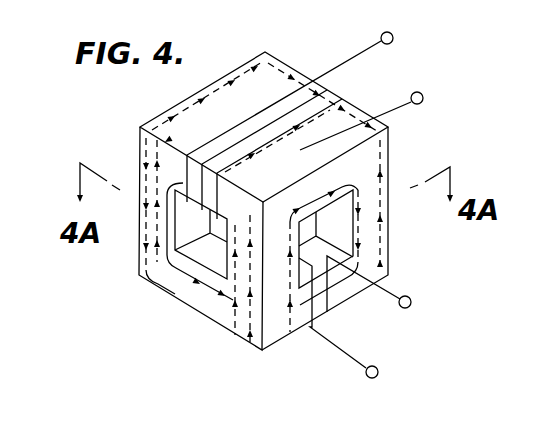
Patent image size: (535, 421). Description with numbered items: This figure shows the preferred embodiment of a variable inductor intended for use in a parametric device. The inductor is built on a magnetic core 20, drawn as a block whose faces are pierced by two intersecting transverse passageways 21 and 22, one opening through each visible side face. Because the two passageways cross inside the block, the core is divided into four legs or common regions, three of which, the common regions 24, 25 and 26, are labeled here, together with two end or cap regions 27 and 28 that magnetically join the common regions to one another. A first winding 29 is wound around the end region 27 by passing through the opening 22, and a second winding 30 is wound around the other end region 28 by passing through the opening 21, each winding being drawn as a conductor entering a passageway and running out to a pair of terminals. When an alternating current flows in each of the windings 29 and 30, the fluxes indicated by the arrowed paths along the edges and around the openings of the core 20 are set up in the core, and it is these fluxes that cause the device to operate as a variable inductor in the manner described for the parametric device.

The magnetic core 20 is at (403, 228).
The transverse passageway 21 is at (347, 217).
The transverse passageway 22 is at (197, 258).
The leg or common region 24 is at (375, 178).
The leg or common region 25 is at (270, 298).
The leg or common region 26 is at (145, 253).
The end or cap region 27 is at (283, 72).
The end or cap region 28 is at (280, 337).
The first winding 29 is at (293, 128).
The second winding 30 is at (412, 293).